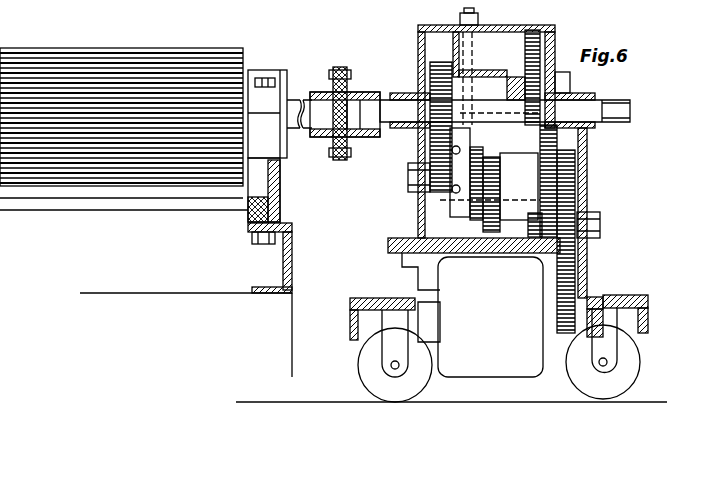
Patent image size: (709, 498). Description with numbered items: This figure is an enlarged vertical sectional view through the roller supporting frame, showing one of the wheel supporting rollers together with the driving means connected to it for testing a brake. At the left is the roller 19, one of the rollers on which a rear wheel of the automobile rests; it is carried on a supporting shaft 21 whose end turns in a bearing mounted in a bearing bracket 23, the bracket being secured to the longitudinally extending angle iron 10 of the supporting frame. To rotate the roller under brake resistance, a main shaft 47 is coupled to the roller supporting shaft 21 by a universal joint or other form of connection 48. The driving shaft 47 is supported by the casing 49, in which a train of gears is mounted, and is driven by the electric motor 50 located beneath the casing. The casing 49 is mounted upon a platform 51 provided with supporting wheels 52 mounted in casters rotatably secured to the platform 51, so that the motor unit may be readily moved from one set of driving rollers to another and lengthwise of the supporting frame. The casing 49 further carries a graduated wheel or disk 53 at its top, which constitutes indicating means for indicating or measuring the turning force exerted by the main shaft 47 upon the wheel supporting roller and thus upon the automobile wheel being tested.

The roller 19 is at (83, 50).
The bearing bracket 23 is at (263, 90).
The supporting shaft 21 is at (301, 100).
The universal joint 48 is at (343, 67).
The main shaft 47 is at (590, 105).
The graduated wheel or disk 53 is at (557, 40).
The casing 49 is at (586, 178).
The angle iron 10 is at (292, 255).
The electric motor 50 is at (526, 366).
The platform 51 is at (635, 293).
The supporting wheel 52 is at (633, 362).